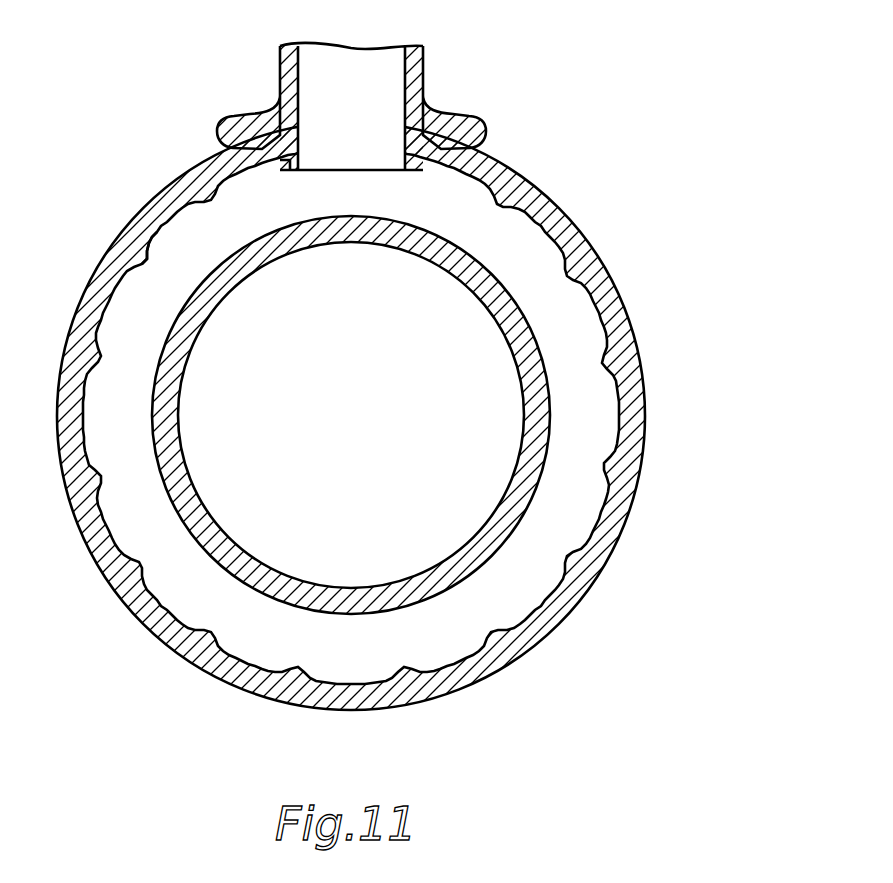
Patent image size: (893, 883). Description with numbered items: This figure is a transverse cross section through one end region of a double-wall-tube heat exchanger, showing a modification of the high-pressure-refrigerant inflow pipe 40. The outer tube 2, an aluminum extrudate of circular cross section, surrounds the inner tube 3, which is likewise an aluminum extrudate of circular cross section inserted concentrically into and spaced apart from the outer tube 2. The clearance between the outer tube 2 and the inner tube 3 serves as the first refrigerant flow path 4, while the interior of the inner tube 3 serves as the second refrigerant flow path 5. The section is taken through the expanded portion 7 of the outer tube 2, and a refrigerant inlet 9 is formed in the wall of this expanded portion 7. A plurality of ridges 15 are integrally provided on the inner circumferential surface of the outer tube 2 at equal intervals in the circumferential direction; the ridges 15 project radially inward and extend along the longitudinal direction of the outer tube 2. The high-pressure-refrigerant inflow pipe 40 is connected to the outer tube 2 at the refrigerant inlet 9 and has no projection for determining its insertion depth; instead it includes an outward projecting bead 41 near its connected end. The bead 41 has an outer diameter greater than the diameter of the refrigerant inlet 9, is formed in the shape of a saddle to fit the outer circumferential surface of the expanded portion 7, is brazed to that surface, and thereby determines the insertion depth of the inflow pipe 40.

The outer tube 2 is at (402, 416).
The inner tube 3 is at (478, 550).
The first refrigerant flow path 4 is at (607, 313).
The second refrigerant flow path 5 is at (347, 400).
The expanded portion 7 is at (643, 368).
The refrigerant inlet 9 is at (283, 172).
The ridges 15 is at (144, 212).
The high-pressure-refrigerant inflow pipe 40 is at (425, 64).
The outward projecting bead 41 is at (484, 118).